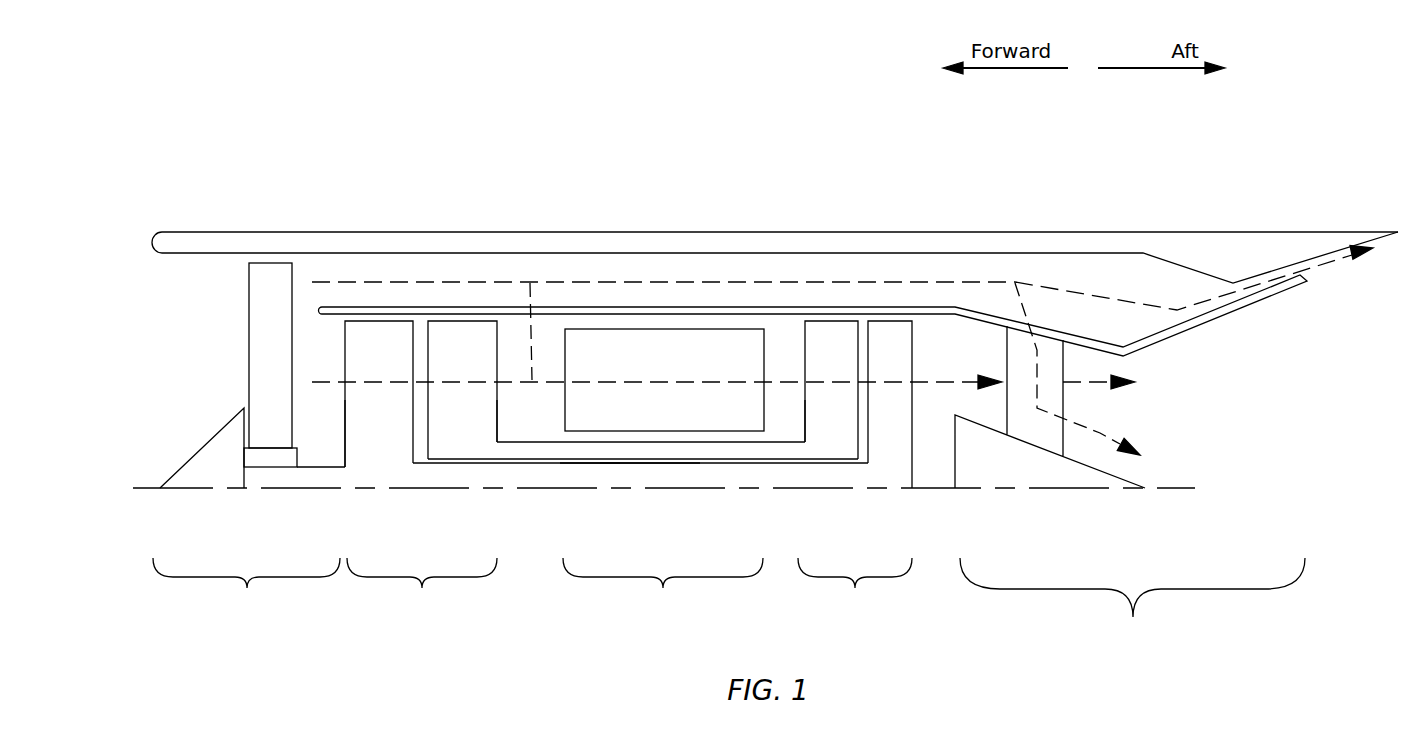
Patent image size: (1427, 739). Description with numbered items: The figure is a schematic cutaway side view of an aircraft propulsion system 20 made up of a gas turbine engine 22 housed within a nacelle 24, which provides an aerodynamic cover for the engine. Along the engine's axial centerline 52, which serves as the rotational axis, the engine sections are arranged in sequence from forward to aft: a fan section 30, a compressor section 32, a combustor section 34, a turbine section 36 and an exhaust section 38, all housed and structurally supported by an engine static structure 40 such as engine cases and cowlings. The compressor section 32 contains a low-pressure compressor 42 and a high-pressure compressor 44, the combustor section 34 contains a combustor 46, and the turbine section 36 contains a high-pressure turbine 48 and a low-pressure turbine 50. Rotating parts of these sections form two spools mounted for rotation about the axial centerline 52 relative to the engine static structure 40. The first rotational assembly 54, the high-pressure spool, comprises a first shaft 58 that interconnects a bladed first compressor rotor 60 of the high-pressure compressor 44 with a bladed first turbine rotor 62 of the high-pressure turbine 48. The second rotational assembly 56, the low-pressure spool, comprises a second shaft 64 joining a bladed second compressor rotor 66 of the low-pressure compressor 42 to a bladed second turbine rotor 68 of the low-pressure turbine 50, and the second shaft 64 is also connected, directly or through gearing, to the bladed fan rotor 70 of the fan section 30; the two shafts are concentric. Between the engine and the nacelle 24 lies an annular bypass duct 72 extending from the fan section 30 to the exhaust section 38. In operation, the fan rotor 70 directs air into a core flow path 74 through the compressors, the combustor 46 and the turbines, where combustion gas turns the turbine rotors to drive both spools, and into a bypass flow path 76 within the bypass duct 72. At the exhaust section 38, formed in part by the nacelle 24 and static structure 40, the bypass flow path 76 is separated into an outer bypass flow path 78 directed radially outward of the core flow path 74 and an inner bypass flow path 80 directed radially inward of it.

The propulsion system 20 is at (1287, 155).
The gas turbine engine 22 is at (780, 328).
The nacelle 24 is at (758, 252).
The fan section 30 is at (246, 585).
The compressor section 32 is at (422, 583).
The combustor section 34 is at (663, 587).
The turbine section 36 is at (855, 580).
The exhaust section 38 is at (1132, 601).
The engine static structure 40 is at (943, 303).
The low-pressure compressor 42 is at (337, 425).
The high-pressure compressor 44 is at (502, 422).
The combustor 46 is at (692, 407).
The high-pressure turbine 48 is at (797, 423).
The low-pressure turbine 50 is at (920, 455).
The axial centerline 52 is at (1180, 490).
The first rotational assembly 54 is at (462, 459).
The second rotational assembly 56 is at (830, 477).
The first shaft 58 is at (652, 470).
The bladed first compressor rotor 60 is at (474, 362).
The bladed first turbine rotor 62 is at (843, 362).
The second shaft 64 is at (590, 477).
The bladed second compressor rotor 66 is at (391, 362).
The bladed second turbine rotor 68 is at (904, 362).
The bladed fan rotor 70 is at (283, 362).
The bypass duct 72 is at (625, 267).
The core flow path 74 is at (530, 283).
The bypass flow path 76 is at (442, 280).
The outer bypass flow path 78 is at (1330, 260).
The inner bypass flow path 80 is at (1100, 435).